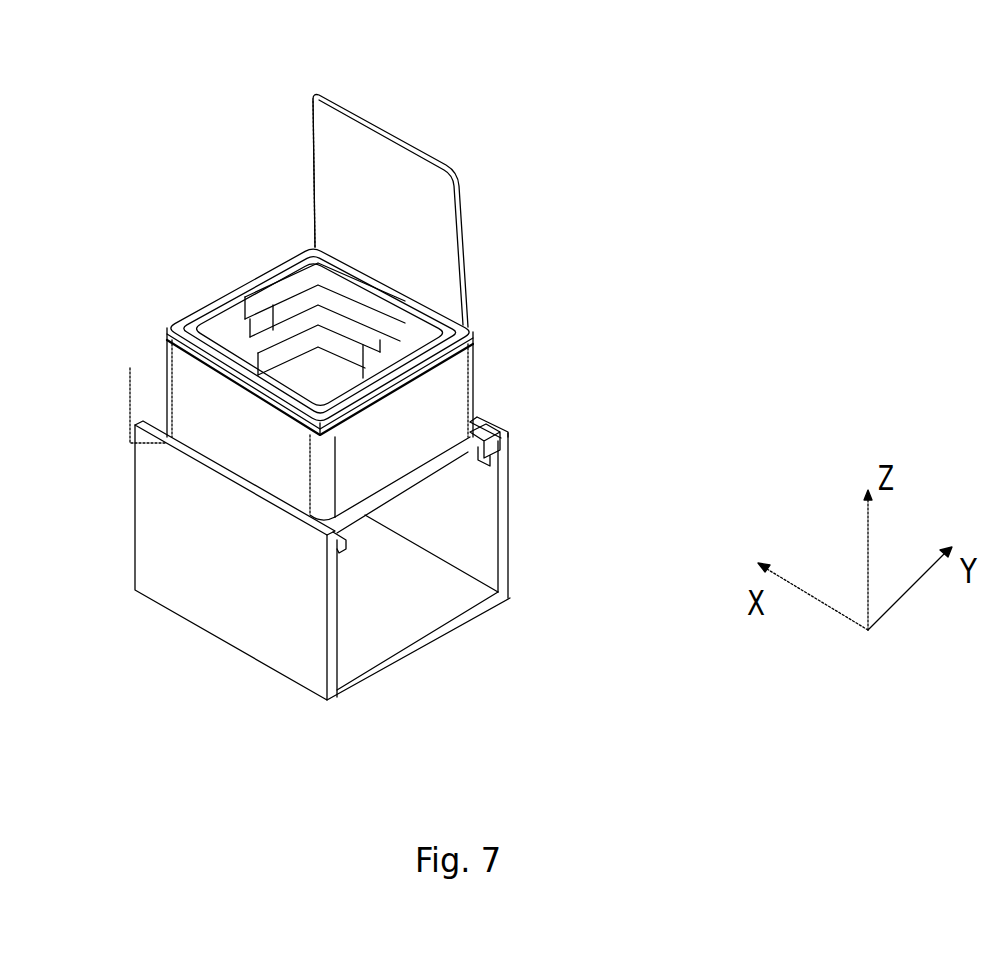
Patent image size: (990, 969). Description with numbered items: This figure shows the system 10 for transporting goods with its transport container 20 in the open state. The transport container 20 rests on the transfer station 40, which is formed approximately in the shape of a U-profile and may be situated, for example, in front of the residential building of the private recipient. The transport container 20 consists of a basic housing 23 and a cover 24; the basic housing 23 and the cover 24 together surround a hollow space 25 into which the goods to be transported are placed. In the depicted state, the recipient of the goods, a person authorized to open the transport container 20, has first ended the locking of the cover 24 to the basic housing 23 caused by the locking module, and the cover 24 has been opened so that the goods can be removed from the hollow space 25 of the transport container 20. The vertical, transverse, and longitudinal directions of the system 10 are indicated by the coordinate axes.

The storage container assembly 10 is at (757, 135).
The container body 20 is at (428, 428).
The side wall 23 is at (195, 410).
The lid 24 is at (432, 253).
The divider insert 25 is at (277, 313).
The base drawer 40 is at (413, 605).